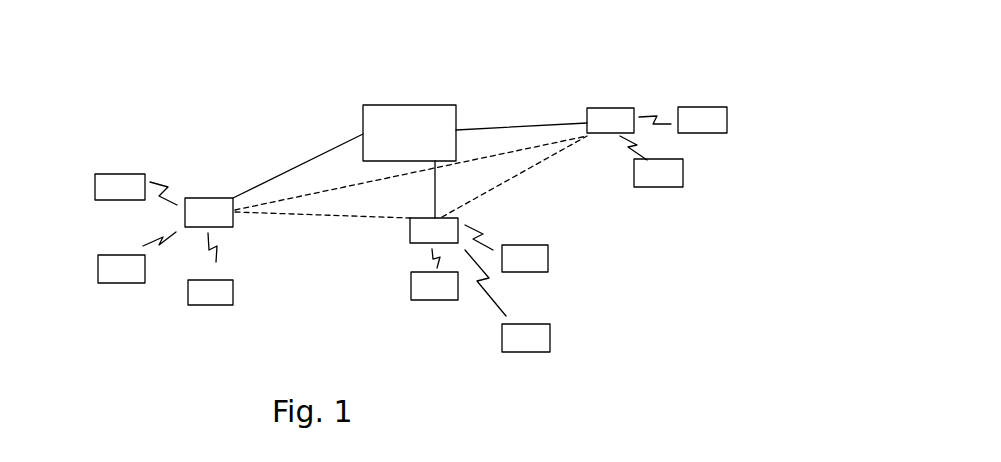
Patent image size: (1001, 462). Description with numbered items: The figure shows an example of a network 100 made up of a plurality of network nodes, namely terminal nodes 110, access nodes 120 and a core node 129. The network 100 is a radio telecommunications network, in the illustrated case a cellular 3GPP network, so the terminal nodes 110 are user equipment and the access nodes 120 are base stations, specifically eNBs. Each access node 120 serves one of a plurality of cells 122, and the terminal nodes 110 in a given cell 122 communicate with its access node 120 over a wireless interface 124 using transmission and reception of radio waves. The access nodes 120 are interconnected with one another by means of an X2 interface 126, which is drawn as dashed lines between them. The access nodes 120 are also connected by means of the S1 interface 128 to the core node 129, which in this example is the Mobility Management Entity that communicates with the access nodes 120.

The network 100 is at (591, 69).
The terminal node 110 is at (110, 173).
The access node 120 is at (208, 198).
The cell 122 is at (162, 298).
The wireless interface 124 is at (168, 185).
The X2 interface 126 is at (350, 183).
The S1 interface 128 is at (290, 165).
The core node 129 is at (412, 105).